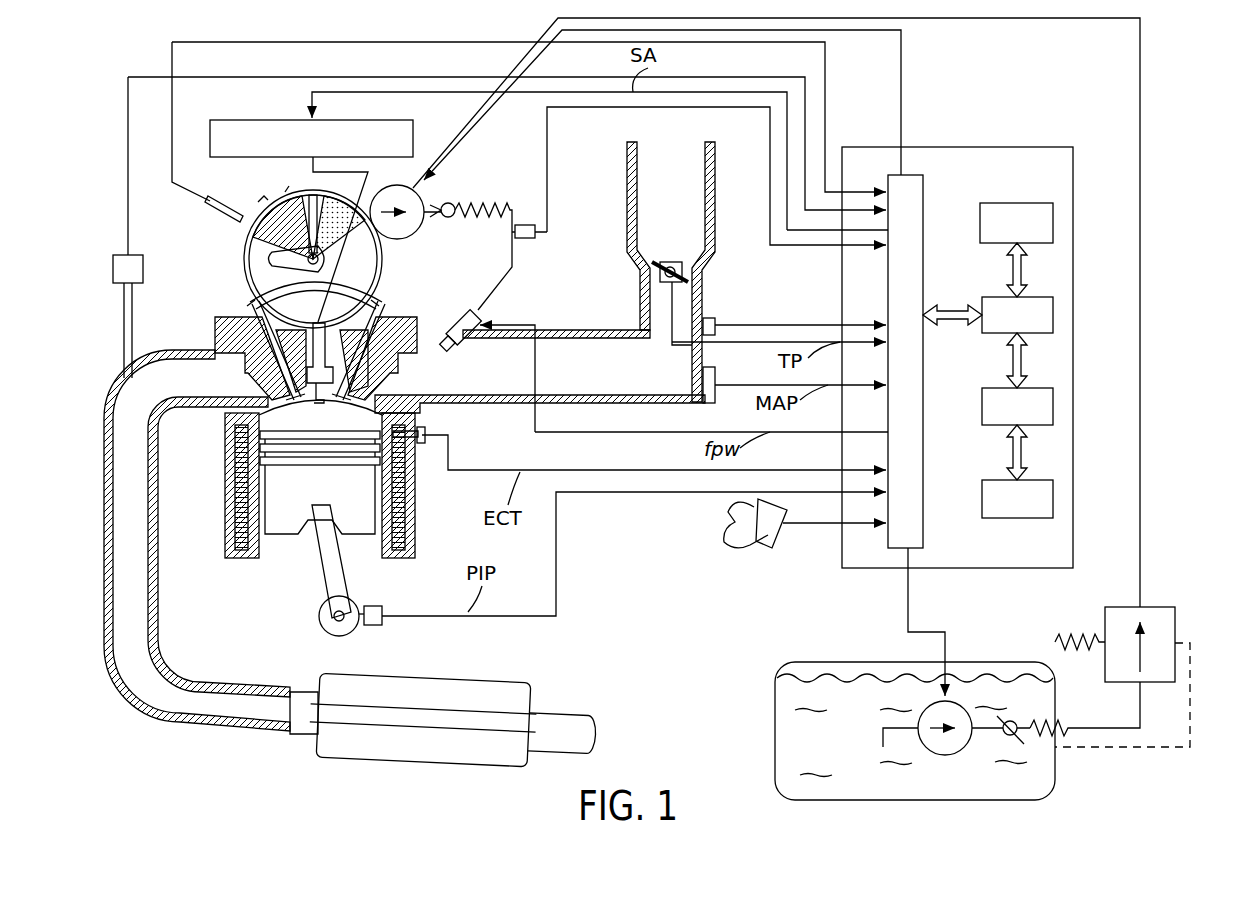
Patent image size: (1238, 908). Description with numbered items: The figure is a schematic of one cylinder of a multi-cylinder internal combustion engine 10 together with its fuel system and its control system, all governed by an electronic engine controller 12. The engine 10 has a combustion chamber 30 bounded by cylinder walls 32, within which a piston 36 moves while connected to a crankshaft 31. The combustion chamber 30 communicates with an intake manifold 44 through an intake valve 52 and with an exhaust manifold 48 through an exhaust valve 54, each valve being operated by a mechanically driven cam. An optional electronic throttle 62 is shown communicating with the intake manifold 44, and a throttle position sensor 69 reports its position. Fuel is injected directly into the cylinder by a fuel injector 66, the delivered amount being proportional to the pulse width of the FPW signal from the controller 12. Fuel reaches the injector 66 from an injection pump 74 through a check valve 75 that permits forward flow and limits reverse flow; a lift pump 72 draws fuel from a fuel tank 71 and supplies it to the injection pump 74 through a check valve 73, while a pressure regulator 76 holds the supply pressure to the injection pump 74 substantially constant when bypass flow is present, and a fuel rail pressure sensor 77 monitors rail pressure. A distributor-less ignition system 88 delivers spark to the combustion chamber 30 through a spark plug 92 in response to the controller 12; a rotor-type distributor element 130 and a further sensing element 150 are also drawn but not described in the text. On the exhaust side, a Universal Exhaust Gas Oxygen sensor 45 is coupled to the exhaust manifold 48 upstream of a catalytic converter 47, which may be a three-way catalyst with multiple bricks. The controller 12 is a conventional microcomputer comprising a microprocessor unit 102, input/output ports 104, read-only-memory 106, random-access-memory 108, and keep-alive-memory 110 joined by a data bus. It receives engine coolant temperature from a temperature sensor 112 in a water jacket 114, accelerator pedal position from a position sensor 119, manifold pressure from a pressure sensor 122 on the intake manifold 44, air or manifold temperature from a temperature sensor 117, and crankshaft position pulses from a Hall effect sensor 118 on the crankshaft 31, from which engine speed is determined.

The internal combustion engine 10 is at (213, 335).
The electronic engine controller 12 is at (940, 147).
The combustion chamber 30 is at (262, 435).
The crankshaft 31 is at (320, 618).
The cylinder walls 32 is at (252, 560).
The piston 36 is at (322, 505).
The intake manifold 44 is at (630, 382).
The Universal Exhaust Gas Oxygen (UEGO) sensor 45 is at (113, 270).
The catalytic converter 47 is at (400, 680).
The exhaust manifold 48 is at (110, 415).
The intake valve 52 is at (385, 310).
The exhaust valve 54 is at (252, 310).
The electronic throttle 62 is at (650, 258).
The fuel injector 66 is at (462, 347).
The throttle position sensor 69 is at (688, 283).
The fuel tank 71 is at (776, 738).
The lift pump 72 is at (955, 752).
The check valve 73 is at (1011, 736).
The injection pump 74 is at (412, 236).
The check valve 75 is at (449, 218).
The pressure regulator 76 is at (1175, 628).
The fuel rail pressure sensor 77 is at (527, 240).
The distributor-less ignition system 88 is at (228, 122).
The spark plug 92 is at (318, 332).
The microprocessor unit 102 is at (985, 297).
The input/output ports 104 is at (923, 200).
The read-only-memory 106 is at (1014, 203).
The random-access-memory 108 is at (985, 388).
The keep-alive-memory 110 is at (985, 480).
The temperature sensor 112 is at (430, 430).
The water jacket 114 is at (232, 560).
The temperature sensor 117 is at (718, 324).
The Hall effect sensor 118 is at (383, 610).
The position sensor 119 is at (782, 552).
The pressure sensor 122 is at (716, 382).
The distributor rotor 130 is at (270, 258).
The exhaust temperature sensor 150 is at (204, 212).